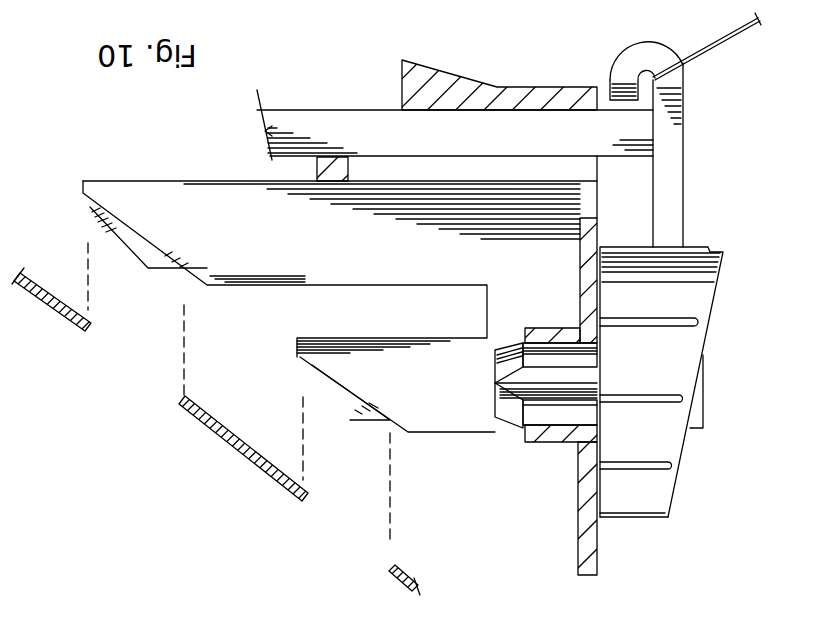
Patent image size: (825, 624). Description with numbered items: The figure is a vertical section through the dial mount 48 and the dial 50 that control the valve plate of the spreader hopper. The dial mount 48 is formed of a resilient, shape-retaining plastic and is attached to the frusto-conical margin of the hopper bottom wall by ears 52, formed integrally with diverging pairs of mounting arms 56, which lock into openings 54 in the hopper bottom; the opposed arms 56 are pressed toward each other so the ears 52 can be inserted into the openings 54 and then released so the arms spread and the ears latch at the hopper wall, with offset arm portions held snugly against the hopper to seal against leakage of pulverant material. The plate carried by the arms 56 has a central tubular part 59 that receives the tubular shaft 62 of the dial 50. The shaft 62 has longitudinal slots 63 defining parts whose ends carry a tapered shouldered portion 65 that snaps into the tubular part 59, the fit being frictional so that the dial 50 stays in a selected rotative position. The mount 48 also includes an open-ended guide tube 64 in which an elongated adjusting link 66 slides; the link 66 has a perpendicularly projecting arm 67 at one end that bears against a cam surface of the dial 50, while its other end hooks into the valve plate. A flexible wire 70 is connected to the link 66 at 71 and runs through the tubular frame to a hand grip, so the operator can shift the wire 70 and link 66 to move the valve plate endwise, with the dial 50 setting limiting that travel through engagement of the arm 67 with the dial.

The dial mount 48 is at (236, 175).
The dial 50 is at (666, 482).
The ear 52 is at (148, 256).
The opening 54 is at (144, 365).
The mounting arm 56 is at (166, 200).
The tubular part 59 is at (552, 327).
The tubular shaft 62 is at (565, 413).
The longitudinal slot 63 is at (497, 384).
The guide tube 64 is at (402, 107).
The tapered shouldered portion 65 is at (510, 413).
The adjusting link 66 is at (340, 122).
The arm 67 is at (699, 407).
The flexible wire 70 is at (744, 36).
The connection 71 is at (627, 80).